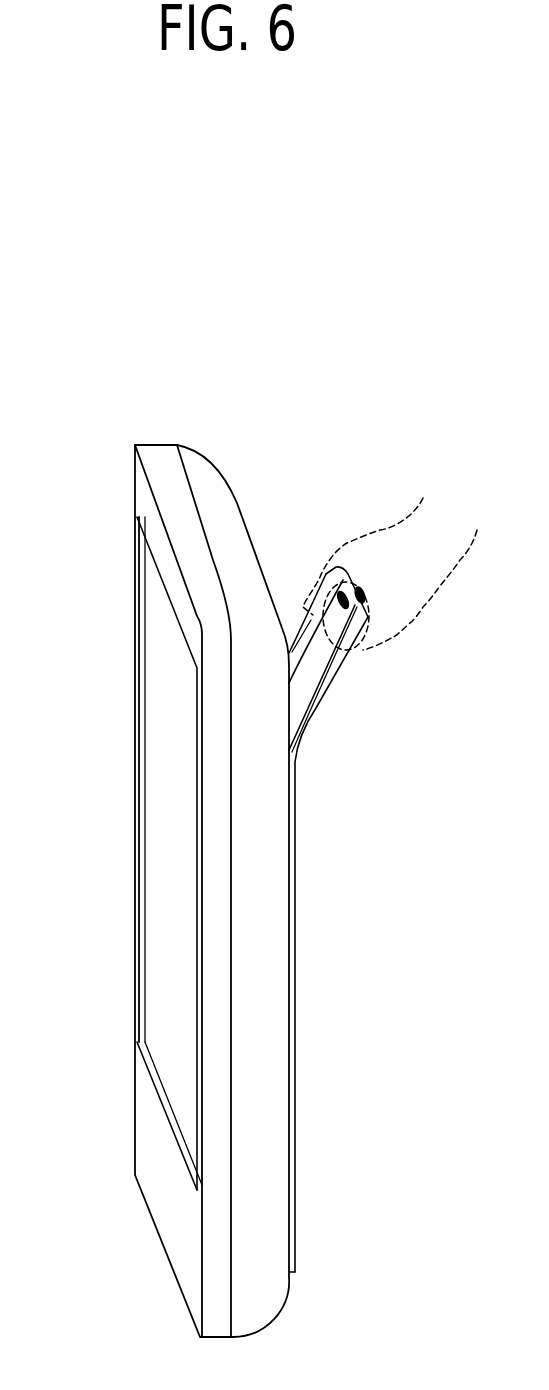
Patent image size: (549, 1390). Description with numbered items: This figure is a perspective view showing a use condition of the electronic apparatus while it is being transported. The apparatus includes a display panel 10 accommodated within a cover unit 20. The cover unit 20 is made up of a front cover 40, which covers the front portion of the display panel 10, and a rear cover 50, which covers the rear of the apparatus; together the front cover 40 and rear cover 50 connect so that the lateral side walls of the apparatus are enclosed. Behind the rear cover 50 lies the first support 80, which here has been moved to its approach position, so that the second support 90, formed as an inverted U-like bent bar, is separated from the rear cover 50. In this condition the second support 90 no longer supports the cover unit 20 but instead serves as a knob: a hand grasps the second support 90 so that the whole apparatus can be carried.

The display panel 10 is at (163, 784).
The cover unit 20 is at (203, 352).
The front cover 40 is at (146, 445).
The rear cover 50 is at (192, 457).
The first support 80 is at (296, 1097).
The second support 90 is at (335, 698).